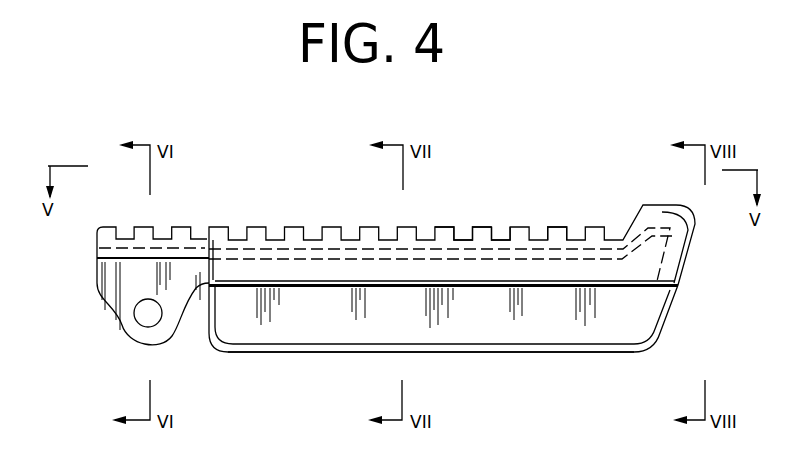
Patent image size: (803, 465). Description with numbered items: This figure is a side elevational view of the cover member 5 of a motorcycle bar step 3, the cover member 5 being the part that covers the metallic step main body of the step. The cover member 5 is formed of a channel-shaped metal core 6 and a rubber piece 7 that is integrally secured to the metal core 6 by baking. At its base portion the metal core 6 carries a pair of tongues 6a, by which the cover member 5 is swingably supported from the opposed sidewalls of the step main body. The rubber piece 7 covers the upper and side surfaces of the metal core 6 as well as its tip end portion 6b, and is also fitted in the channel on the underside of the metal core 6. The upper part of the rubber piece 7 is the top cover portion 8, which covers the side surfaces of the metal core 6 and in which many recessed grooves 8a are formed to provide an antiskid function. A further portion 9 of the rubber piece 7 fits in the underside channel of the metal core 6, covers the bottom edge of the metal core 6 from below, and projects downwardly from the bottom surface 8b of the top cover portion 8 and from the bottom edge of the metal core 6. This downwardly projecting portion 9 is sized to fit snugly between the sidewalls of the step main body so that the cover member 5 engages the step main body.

The bar step 3 is at (527, 364).
The cover member 5 is at (464, 199).
The metal core 6 is at (348, 247).
The tongue 6a is at (166, 327).
The tip end portion 6b is at (636, 216).
The rubber piece 7 is at (296, 221).
The top cover portion 8 is at (558, 226).
The recessed groove 8a is at (501, 235).
The bottom surface 8b is at (327, 288).
The downwardly projecting portion 9 is at (470, 320).